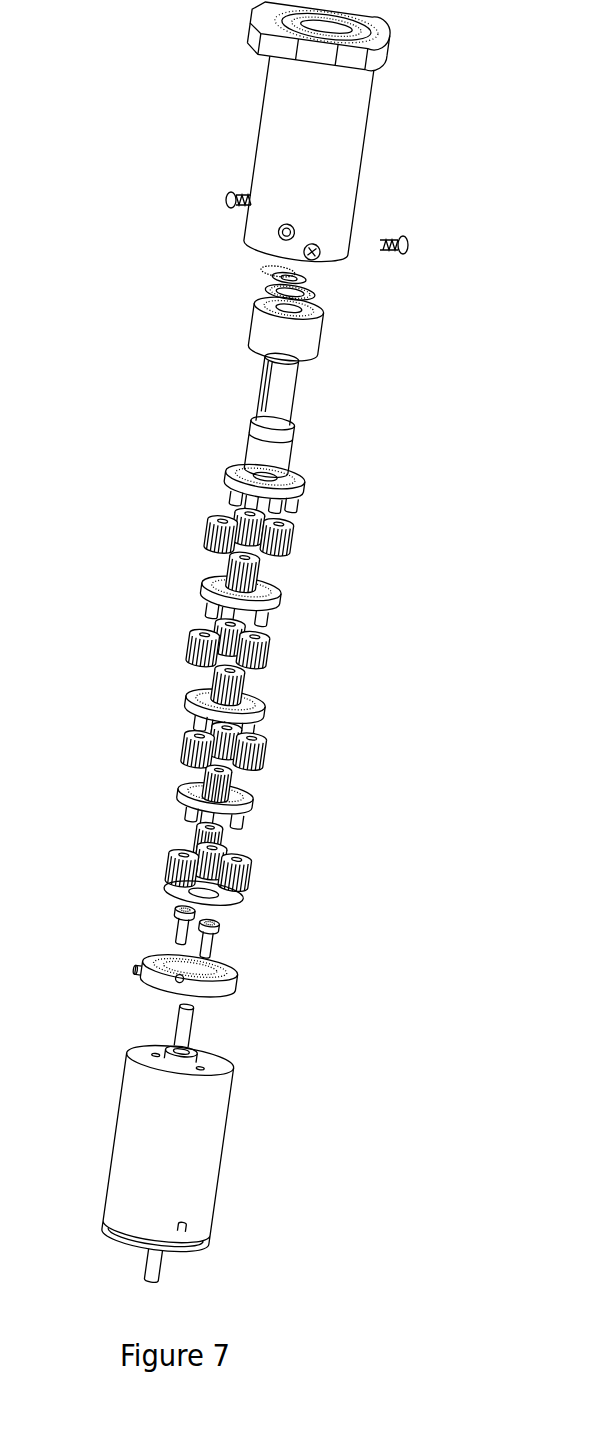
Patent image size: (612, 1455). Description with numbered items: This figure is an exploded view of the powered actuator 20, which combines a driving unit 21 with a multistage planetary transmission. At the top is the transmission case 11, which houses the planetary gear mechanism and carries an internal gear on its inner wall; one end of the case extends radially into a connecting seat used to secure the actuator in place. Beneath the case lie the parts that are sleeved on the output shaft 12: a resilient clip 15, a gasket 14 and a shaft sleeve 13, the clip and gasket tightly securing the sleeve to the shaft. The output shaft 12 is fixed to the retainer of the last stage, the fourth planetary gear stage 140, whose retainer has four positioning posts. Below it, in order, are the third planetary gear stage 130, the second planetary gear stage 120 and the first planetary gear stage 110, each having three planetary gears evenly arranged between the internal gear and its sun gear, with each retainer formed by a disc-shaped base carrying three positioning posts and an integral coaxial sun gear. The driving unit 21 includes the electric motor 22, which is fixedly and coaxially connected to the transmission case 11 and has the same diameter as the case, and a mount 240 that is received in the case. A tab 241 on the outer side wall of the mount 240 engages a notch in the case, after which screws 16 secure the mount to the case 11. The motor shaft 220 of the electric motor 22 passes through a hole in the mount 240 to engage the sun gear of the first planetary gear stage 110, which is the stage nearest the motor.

The powered actuator 20 is at (128, 25).
The transmission case 11 is at (372, 136).
The screws 16 is at (222, 203).
The resilient clip 15 is at (308, 276).
The gasket 14 is at (314, 290).
The shaft sleeve 13 is at (318, 328).
The output shaft 12 is at (296, 386).
The fourth planetary gear stage 140 is at (314, 515).
The third planetary gear stage 130 is at (311, 605).
The second planetary gear stage 120 is at (290, 708).
The first planetary gear stage 110 is at (275, 857).
The tab 241 is at (220, 940).
The mount 240 is at (252, 984).
The motor shaft 220 is at (193, 1022).
The driving unit 21 is at (110, 1036).
The electric motor 22 is at (239, 1155).